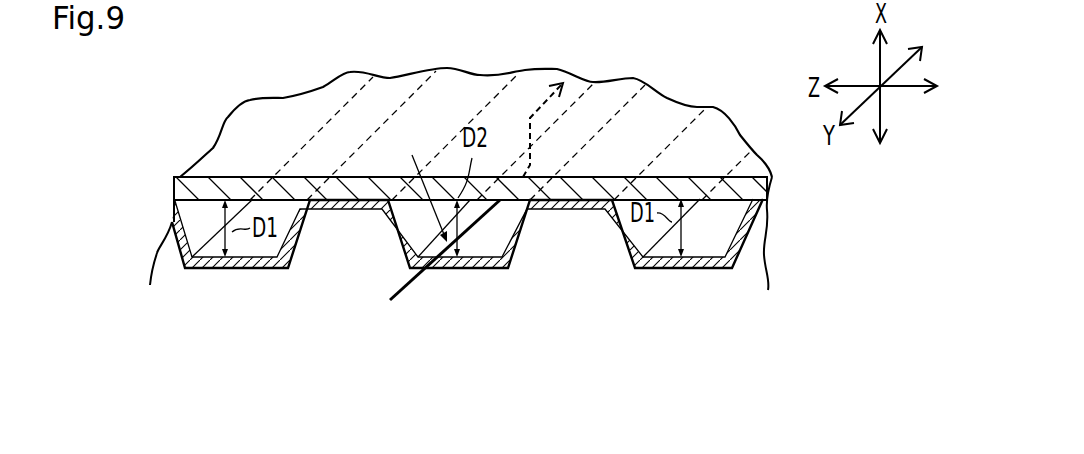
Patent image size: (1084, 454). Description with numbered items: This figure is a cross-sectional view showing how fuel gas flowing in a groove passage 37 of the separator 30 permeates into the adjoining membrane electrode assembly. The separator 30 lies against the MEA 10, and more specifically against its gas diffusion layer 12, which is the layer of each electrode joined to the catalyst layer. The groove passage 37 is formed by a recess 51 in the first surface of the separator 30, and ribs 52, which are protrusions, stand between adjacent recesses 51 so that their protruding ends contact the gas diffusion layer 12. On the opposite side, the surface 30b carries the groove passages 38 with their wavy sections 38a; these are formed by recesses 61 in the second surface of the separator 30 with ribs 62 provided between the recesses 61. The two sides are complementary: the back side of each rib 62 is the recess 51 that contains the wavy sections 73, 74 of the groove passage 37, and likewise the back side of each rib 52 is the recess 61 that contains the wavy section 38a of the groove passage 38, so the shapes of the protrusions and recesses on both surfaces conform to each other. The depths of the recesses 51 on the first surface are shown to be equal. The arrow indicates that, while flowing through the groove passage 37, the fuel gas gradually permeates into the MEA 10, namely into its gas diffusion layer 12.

The MEA 10 is at (175, 188).
The gas diffusion layer 12 is at (175, 188).
The separator 30 is at (258, 273).
The surface 30b is at (713, 268).
The groove passage 37 is at (421, 182).
The groove passage 38 is at (394, 250).
The wavy section 38a is at (460, 291).
The recess 51 is at (197, 272).
The rib 52 is at (334, 195).
The recess 61 is at (368, 212).
The rib 62 is at (223, 268).
The wavy section 73 is at (488, 278).
The wavy section 74 is at (461, 281).